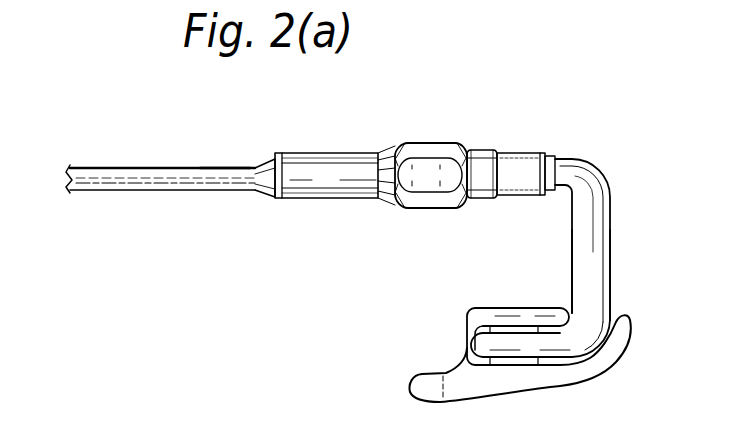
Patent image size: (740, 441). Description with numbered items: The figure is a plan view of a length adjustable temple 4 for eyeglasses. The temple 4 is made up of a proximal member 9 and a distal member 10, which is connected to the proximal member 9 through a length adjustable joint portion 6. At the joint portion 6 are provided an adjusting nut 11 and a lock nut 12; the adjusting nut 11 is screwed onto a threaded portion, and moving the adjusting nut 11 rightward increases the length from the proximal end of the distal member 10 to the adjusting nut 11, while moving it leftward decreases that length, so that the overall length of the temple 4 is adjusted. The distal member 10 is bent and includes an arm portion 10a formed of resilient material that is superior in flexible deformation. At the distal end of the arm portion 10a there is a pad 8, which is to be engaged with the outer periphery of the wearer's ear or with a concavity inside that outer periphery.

The temple 4 is at (105, 150).
The proximal member 9 is at (200, 178).
The joint portion 6 is at (396, 134).
The lock nut 12 is at (420, 206).
The adjusting nut 11 is at (480, 152).
The distal member 10 is at (579, 156).
The arm portion 10a is at (611, 220).
The pad 8 is at (532, 392).